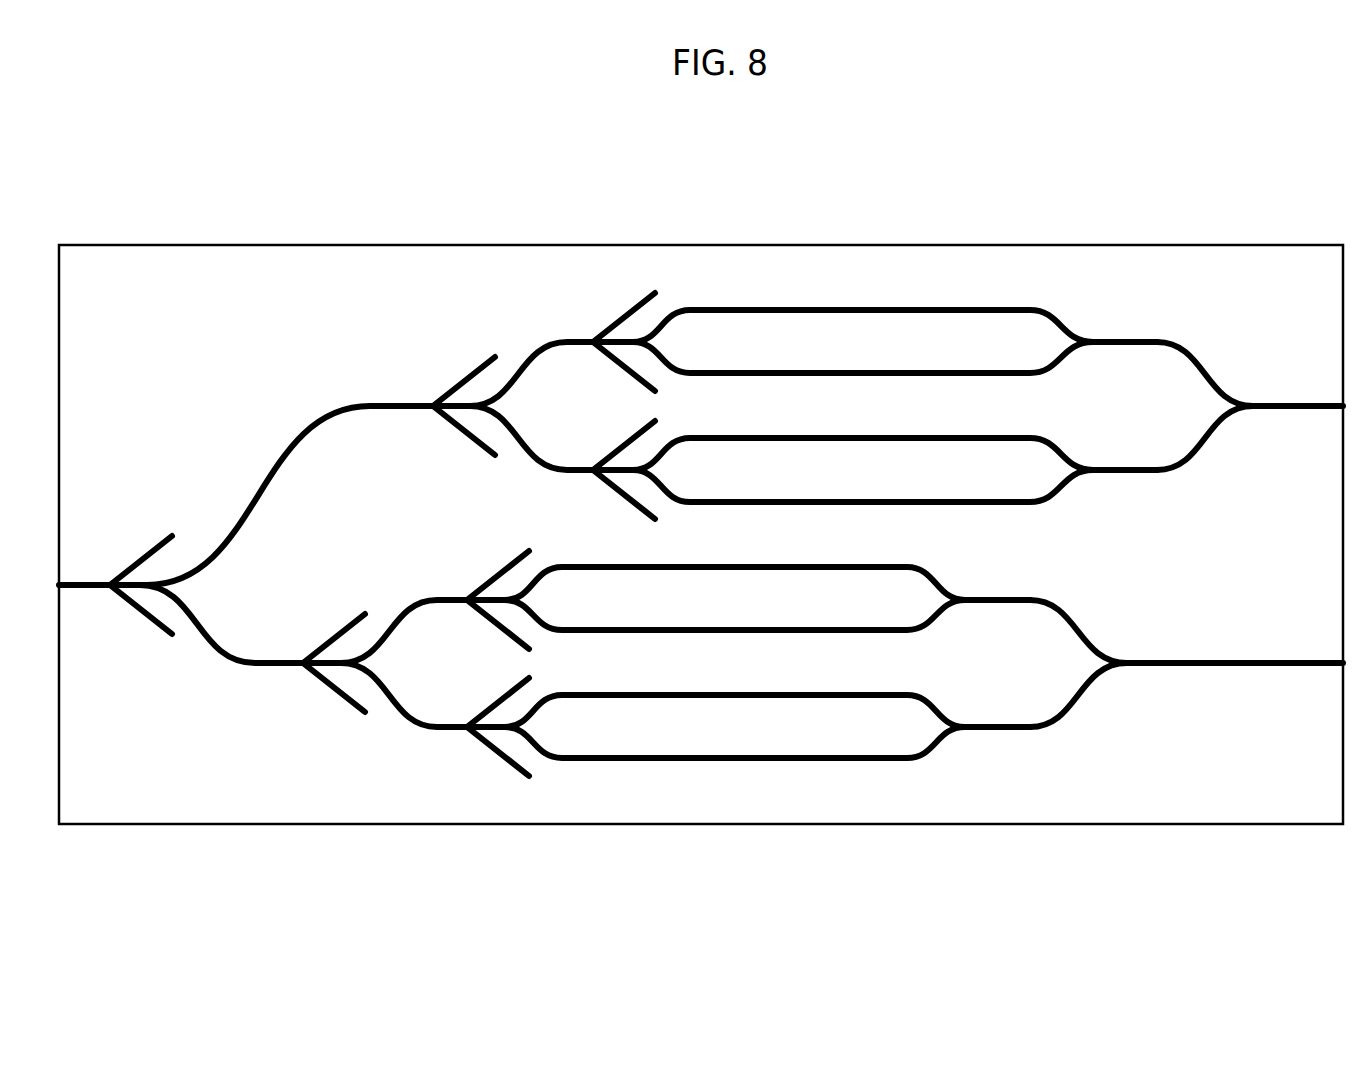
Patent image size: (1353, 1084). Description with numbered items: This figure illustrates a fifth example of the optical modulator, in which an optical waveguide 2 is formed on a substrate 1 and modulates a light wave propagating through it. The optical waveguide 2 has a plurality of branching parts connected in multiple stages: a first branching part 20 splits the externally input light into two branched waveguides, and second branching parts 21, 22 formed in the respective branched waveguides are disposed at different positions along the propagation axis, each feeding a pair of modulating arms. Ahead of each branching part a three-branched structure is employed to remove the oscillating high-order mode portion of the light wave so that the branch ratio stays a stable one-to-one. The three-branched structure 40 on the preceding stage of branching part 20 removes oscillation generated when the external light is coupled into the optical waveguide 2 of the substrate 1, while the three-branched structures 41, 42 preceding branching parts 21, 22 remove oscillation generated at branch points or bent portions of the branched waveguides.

The substrate 1 is at (1150, 824).
The optical waveguide 2 is at (1005, 307).
The first branching part 20 is at (160, 585).
The second branching part 21 is at (510, 727).
The second branching part 22 is at (478, 407).
The three-branched structure 40 is at (123, 606).
The three-branched structure 41 is at (493, 760).
The three-branched structure 42 is at (460, 373).